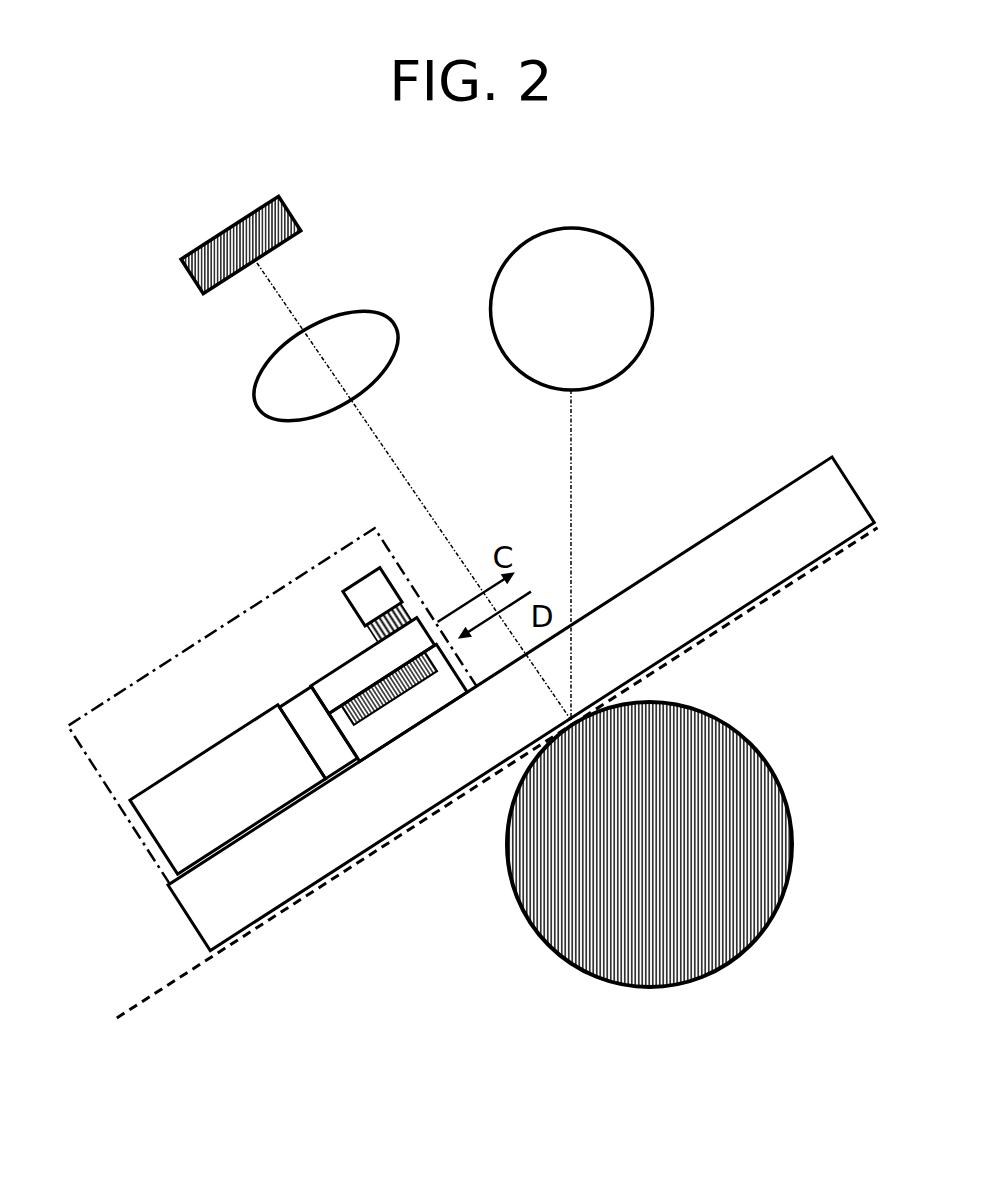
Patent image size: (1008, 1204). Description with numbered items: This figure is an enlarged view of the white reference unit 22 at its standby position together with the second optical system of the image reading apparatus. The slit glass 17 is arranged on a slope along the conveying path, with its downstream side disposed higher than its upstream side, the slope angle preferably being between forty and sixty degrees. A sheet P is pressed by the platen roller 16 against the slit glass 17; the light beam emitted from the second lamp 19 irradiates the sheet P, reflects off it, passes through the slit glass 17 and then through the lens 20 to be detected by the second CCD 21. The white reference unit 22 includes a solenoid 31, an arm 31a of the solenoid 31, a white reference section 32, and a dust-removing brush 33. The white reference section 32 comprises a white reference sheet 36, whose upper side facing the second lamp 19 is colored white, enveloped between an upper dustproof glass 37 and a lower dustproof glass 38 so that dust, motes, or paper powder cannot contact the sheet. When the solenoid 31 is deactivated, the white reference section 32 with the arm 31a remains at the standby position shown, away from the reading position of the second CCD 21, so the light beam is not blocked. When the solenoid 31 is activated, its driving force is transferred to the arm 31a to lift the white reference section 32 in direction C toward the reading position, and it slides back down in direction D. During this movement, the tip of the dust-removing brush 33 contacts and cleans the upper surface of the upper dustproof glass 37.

The platen roller 16 is at (792, 840).
The slit glass 17 is at (803, 472).
The second lamp 19 is at (570, 227).
The lens 20 is at (355, 320).
The second CCD 21 is at (255, 208).
The white reference unit 22 is at (113, 697).
The solenoid 31 is at (168, 835).
The arm 31a is at (312, 718).
The white reference section 32 is at (331, 652).
The dust-removing brush 33 is at (357, 595).
The white reference sheet 36 is at (387, 698).
The upper dustproof glass 37 is at (328, 690).
The lower dustproof glass 38 is at (445, 700).
The sheet P is at (187, 977).